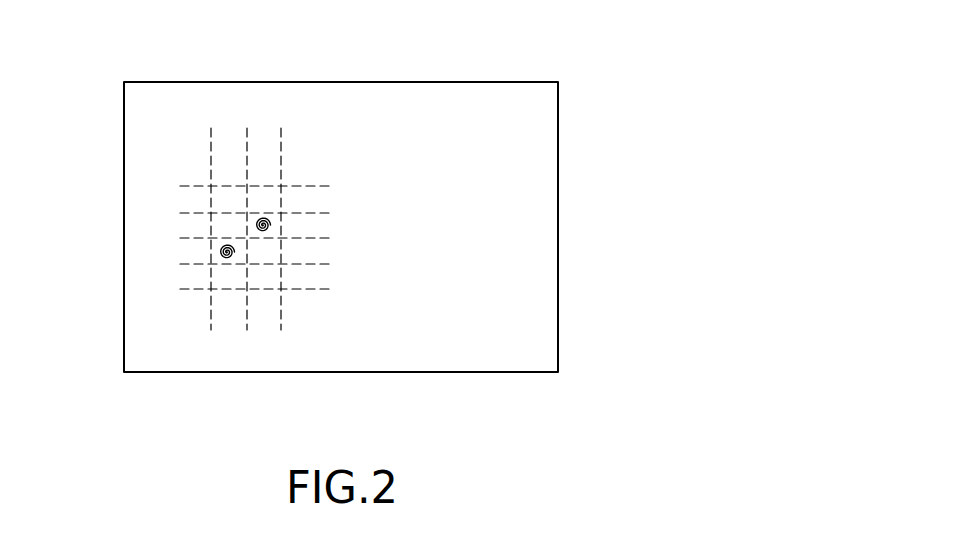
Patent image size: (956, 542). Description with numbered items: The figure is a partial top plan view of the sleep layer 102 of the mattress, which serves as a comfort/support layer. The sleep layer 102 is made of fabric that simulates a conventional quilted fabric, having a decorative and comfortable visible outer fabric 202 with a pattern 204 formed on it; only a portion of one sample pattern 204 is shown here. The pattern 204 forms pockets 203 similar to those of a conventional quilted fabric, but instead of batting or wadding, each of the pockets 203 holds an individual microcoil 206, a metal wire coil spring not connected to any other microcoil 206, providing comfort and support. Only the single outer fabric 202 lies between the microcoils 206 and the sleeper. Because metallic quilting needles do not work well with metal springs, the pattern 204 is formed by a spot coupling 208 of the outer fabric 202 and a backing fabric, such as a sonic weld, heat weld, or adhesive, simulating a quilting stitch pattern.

The sleep layer 102 is at (610, 142).
The outer fabric 202 is at (540, 103).
The pockets 203 is at (223, 201).
The pattern 204 is at (190, 326).
The microcoil 206 is at (270, 222).
The spot coupling 208 is at (263, 290).